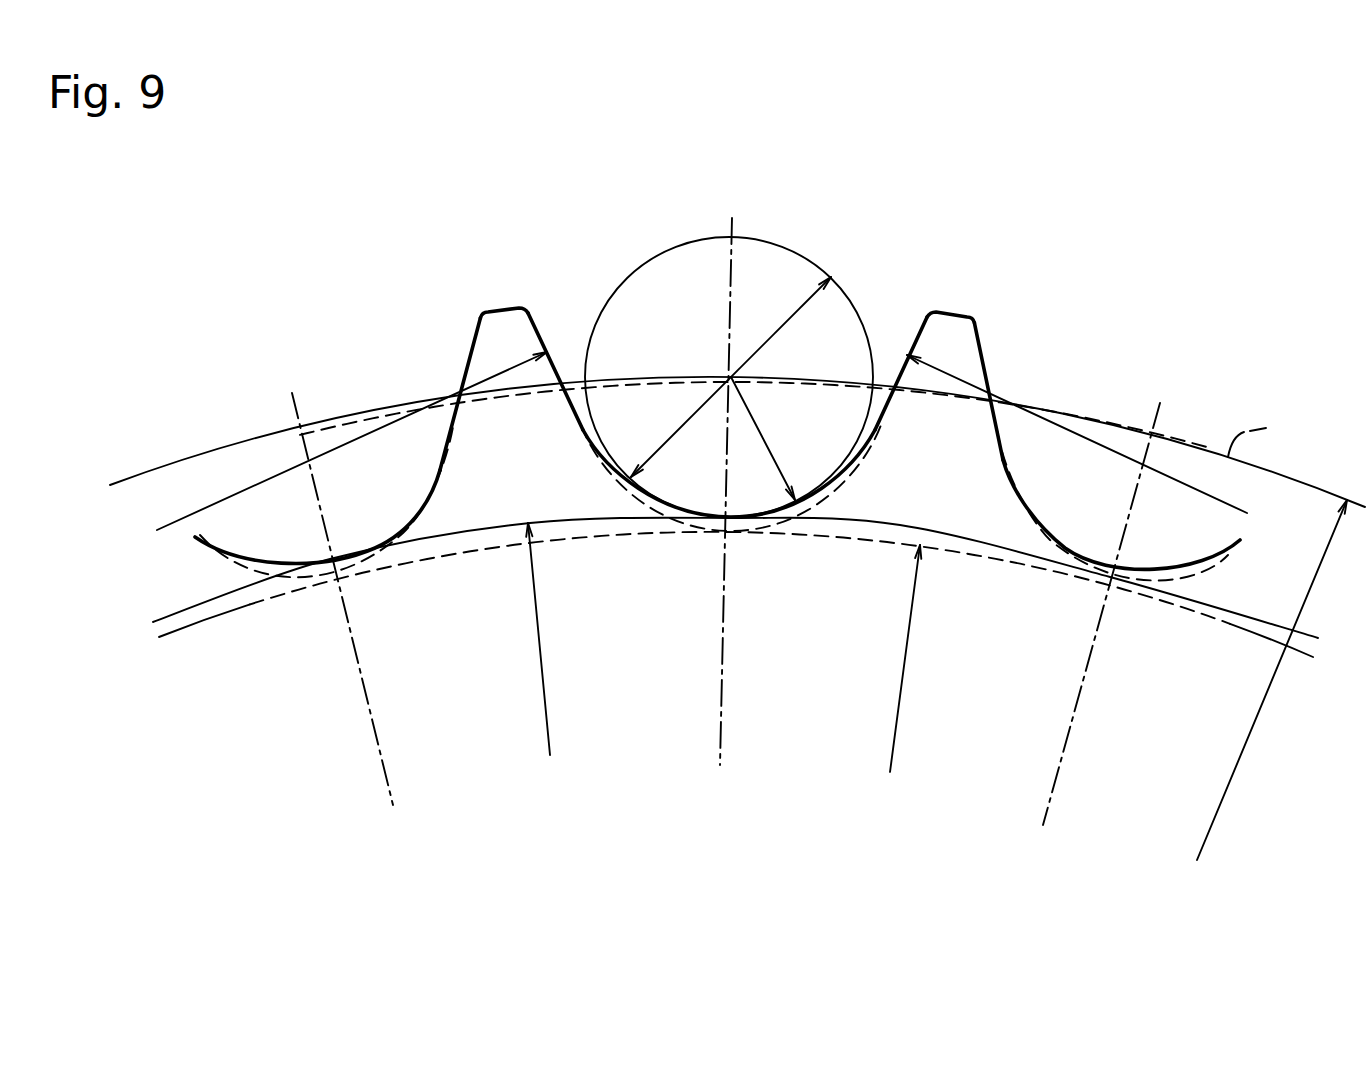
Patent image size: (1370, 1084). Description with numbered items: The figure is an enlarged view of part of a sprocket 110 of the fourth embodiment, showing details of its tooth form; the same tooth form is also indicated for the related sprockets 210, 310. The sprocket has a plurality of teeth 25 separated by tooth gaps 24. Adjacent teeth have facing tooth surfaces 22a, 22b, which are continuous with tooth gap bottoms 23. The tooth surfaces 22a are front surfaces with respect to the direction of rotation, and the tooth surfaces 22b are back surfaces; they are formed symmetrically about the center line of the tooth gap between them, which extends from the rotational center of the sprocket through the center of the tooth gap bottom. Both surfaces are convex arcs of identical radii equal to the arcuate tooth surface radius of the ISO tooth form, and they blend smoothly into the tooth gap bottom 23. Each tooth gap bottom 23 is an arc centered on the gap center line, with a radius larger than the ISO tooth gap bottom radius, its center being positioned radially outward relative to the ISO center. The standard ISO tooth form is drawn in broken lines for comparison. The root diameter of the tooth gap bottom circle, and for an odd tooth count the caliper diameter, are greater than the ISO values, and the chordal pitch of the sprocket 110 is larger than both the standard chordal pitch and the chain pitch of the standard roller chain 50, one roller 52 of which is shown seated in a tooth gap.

The sprocket 110 is at (833, 803).
The sprocket (second embodiment) 210 is at (737, 553).
The sprocket (third embodiment) 310 is at (737, 553).
The standard roller chain 50 is at (672, 207).
The roller 52 is at (792, 250).
The teeth 25 is at (503, 309).
The tooth surface 22a is at (470, 333).
The tooth surface 22b is at (546, 330).
The tooth gap bottom 23 is at (691, 516).
The tooth gap 24 is at (362, 513).